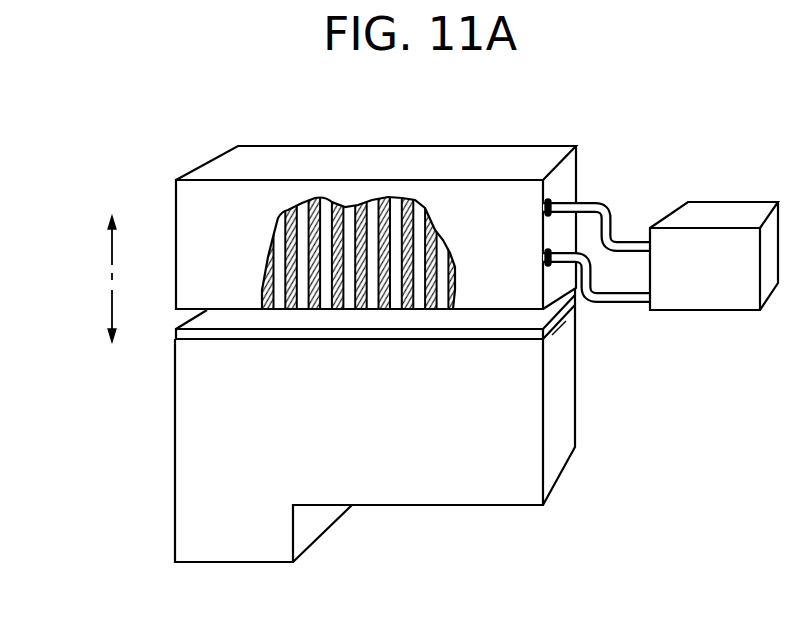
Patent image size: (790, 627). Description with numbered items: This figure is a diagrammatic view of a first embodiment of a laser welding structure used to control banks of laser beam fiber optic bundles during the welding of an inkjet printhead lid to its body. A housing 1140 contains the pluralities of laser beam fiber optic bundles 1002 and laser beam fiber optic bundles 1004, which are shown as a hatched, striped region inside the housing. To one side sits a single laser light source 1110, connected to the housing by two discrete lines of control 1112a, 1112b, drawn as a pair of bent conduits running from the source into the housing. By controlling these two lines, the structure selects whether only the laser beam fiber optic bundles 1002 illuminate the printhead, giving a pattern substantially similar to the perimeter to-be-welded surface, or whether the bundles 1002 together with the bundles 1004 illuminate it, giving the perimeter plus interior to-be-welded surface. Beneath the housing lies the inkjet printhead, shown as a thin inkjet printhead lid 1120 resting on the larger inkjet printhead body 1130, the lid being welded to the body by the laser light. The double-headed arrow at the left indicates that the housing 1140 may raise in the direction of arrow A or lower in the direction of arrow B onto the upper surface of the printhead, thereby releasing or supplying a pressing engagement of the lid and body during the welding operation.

The housing 1140 is at (280, 158).
The laser beam fiber optic bundles 1002 is at (262, 272).
The laser beam fiber optic bundles 1004 is at (313, 298).
The laser light source 1110 is at (705, 210).
The line of control 1112a is at (620, 303).
The line of control 1112b is at (590, 202).
The inkjet printhead lid 1120 is at (563, 313).
The inkjet printhead body 1130 is at (560, 407).
The arrow A is at (108, 245).
The arrow B is at (108, 308).